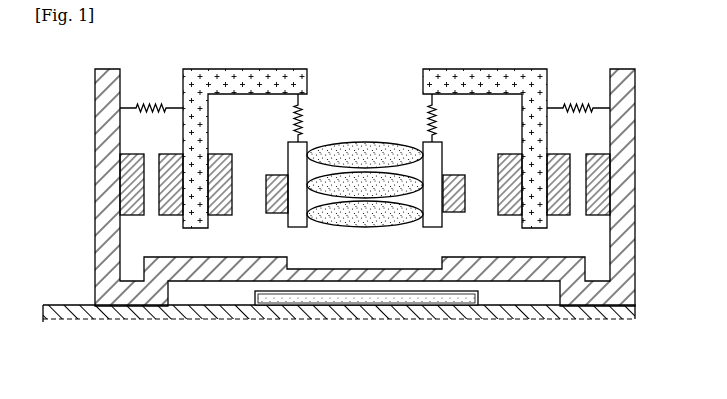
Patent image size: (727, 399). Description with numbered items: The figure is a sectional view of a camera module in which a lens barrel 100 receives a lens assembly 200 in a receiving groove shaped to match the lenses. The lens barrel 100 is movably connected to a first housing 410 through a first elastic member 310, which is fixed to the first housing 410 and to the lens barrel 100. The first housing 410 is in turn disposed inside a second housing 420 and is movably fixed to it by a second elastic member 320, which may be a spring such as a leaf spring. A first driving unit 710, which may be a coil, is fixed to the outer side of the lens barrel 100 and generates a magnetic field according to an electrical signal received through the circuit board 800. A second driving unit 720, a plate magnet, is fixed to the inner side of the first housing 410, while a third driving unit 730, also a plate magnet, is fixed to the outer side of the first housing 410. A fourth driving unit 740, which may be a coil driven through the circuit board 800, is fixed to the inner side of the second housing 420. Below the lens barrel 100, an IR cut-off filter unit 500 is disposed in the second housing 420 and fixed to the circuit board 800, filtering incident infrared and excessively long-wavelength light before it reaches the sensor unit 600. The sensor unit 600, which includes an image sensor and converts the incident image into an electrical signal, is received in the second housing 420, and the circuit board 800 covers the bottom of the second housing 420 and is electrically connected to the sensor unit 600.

The lens barrel 100 is at (300, 228).
The lens assembly 200 is at (365, 129).
The first elastic member 310 is at (315, 113).
The second elastic member 320 is at (580, 88).
The first housing 410 is at (485, 75).
The second housing 420 is at (627, 127).
The IR cut-off filter unit 500 is at (402, 282).
The sensor unit 600 is at (353, 299).
The first driving unit 710 is at (276, 211).
The second driving unit 720 is at (220, 213).
The third driving unit 730 is at (172, 213).
The fourth driving unit 740 is at (134, 213).
The circuit board 800 is at (600, 319).